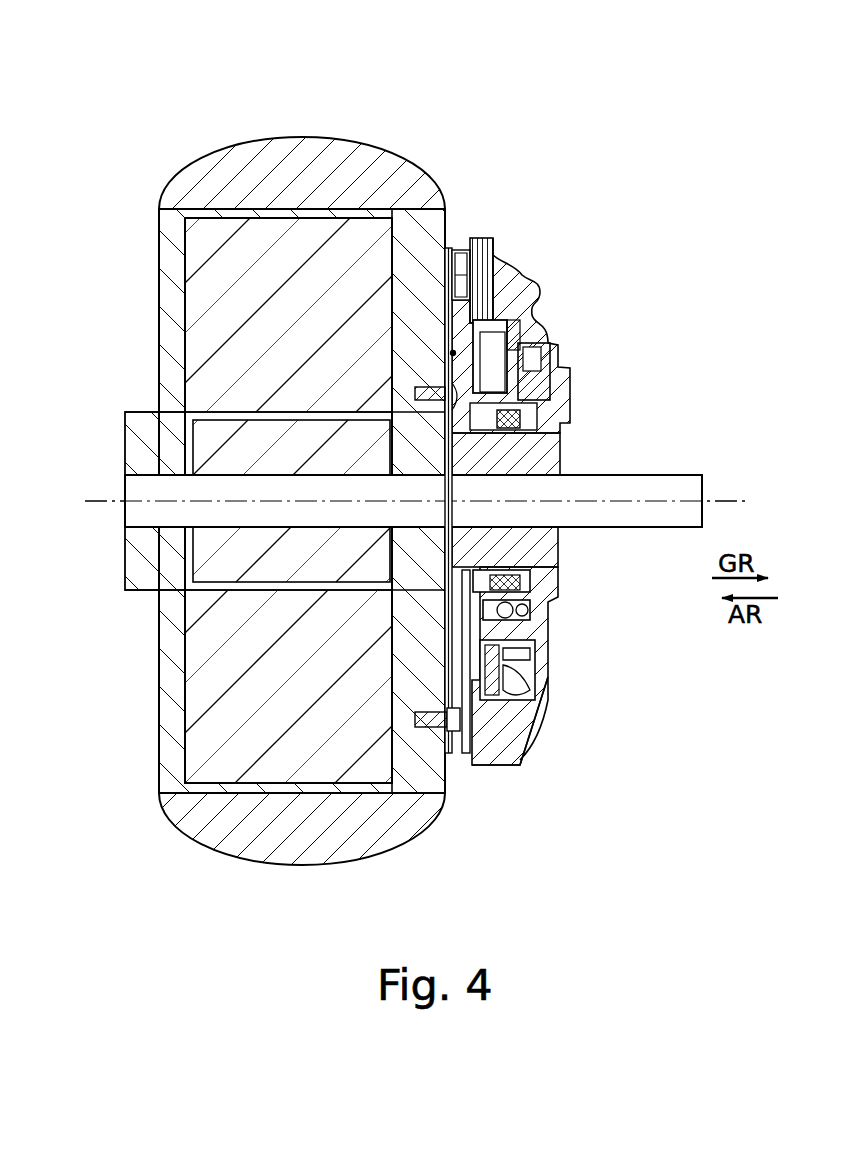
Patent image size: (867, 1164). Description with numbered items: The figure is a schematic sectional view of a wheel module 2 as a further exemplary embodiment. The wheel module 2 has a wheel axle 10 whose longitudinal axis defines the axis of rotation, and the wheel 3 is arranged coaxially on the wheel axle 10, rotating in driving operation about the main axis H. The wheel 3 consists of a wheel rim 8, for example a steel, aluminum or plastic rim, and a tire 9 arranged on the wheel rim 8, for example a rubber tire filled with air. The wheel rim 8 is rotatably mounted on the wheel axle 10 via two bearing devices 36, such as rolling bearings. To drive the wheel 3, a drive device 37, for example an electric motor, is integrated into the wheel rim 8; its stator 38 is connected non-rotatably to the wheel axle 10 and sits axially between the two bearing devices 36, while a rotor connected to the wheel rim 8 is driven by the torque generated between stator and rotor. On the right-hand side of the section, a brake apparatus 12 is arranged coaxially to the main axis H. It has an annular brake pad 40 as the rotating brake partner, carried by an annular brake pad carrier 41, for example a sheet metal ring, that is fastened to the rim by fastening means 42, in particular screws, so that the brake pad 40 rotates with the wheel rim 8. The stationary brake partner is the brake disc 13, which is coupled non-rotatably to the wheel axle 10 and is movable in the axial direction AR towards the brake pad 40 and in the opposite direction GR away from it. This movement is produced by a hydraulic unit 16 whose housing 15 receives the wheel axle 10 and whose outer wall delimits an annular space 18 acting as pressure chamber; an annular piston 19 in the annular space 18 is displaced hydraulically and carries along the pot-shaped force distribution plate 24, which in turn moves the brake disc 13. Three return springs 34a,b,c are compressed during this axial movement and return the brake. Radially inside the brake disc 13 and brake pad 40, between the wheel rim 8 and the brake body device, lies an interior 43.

The wheel module 2 is at (192, 82).
The wheel 3 is at (152, 232).
The wheel rim 8 is at (417, 222).
The tire 9 is at (357, 163).
The wheel axle 10 is at (677, 483).
The brake apparatus 12 is at (553, 282).
The brake disc 13 is at (505, 250).
The housing 15 is at (573, 392).
The hydraulic unit 16 is at (533, 572).
The annular space 18 is at (560, 420).
The annular piston 19 is at (533, 610).
The force distribution plate 24 is at (530, 733).
The return springs 34a,b,c is at (533, 663).
The bearing devices 36 is at (160, 452).
The drive device 37 is at (180, 650).
The stator 38 is at (213, 430).
The brake pad 40 is at (462, 250).
The brake pad carrier 41 is at (447, 250).
The fastening means 42 is at (432, 728).
The interior 43 is at (453, 353).
The main axis H is at (732, 497).